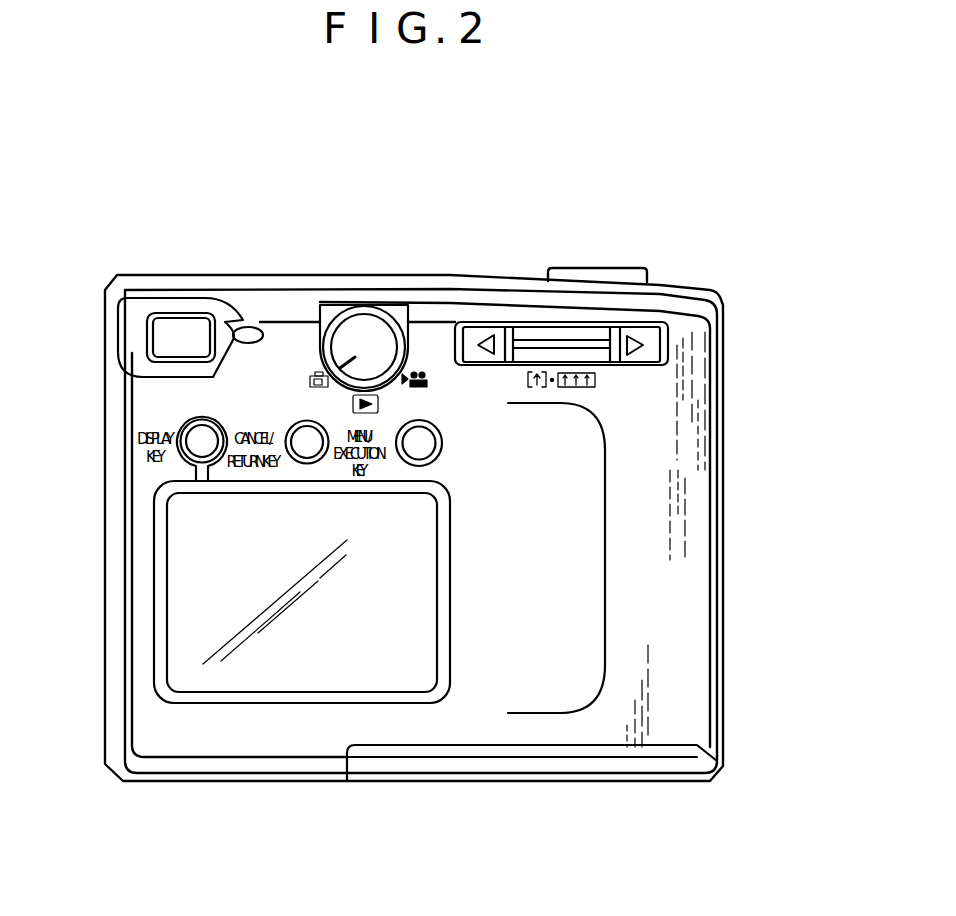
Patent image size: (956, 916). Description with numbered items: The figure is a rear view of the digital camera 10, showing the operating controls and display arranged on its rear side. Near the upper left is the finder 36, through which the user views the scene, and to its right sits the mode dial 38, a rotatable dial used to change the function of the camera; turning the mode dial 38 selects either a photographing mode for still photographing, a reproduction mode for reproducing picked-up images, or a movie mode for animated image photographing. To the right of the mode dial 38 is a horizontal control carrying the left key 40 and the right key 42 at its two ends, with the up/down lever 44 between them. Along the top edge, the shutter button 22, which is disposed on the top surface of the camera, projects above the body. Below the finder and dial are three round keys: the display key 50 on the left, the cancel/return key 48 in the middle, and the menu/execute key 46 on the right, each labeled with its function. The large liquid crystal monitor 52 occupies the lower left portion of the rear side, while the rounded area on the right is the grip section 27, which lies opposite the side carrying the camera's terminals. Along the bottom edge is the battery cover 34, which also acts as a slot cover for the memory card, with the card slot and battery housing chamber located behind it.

The digital camera 10 is at (779, 273).
The shutter button 22 is at (617, 277).
The grip section 27 is at (600, 572).
The battery cover 34 is at (523, 770).
The finder 36 is at (180, 325).
The mode dial 38 is at (362, 322).
The left key 40 is at (472, 332).
The right key 42 is at (651, 337).
The up/down lever 44 is at (535, 332).
The menu/execute key 46 is at (434, 442).
The cancel/return key 48 is at (304, 430).
The display key 50 is at (193, 424).
The liquid crystal monitor 52 is at (196, 557).